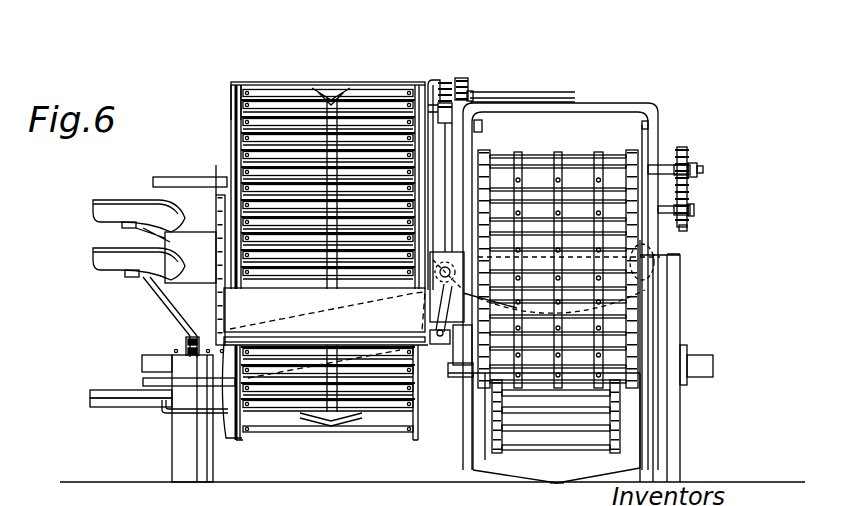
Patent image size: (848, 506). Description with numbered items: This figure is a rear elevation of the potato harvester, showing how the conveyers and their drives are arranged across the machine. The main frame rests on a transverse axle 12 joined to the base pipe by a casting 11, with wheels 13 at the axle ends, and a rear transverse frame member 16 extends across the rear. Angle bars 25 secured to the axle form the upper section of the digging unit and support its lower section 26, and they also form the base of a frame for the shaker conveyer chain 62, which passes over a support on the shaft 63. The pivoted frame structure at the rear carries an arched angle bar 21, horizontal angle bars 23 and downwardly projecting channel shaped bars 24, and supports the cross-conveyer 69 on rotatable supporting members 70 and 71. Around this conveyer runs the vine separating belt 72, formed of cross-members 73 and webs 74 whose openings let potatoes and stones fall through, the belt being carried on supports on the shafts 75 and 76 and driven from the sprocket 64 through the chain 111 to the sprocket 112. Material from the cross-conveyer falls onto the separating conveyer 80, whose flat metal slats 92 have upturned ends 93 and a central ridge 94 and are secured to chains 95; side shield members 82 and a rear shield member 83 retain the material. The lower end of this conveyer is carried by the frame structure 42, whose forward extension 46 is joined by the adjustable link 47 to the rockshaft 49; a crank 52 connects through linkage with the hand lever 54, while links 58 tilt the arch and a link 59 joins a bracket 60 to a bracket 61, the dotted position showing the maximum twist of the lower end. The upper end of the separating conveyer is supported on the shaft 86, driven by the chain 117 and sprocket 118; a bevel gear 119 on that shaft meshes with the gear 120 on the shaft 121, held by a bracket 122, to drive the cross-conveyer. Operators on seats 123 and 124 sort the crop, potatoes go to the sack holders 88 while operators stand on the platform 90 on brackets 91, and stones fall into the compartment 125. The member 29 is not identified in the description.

The casting 11 is at (505, 440).
The transverse axle 12 is at (142, 358).
The wheels 13 is at (172, 446).
The rear transverse frame member 16 is at (410, 383).
The arched angle bar 21 is at (650, 103).
The horizontally extending angle bars 23 is at (492, 197).
The channel shaped bars 24 is at (640, 345).
The angle bars 25 is at (640, 392).
The lower section of the digging unit 26 is at (485, 468).
The brace joint 29 is at (557, 483).
The frame structure 42 is at (225, 352).
The forward extension 46 is at (210, 235).
The manually adjustable link 47 is at (220, 170).
The transverse rockshaft 49 is at (188, 340).
The crank 52 is at (218, 312).
The hand lever 54 is at (170, 288).
The links 58 is at (633, 125).
The link 59 is at (472, 378).
The bracket 60 is at (458, 355).
The bracket 61 is at (473, 298).
The shaker conveyer chain 62 is at (630, 406).
The shaft 63 is at (695, 212).
The sprocket 64 is at (690, 222).
The cross-conveyer 69 is at (622, 312).
The rotatable supporting member 70 is at (660, 255).
The shaft 71 is at (422, 300).
The belt 72 is at (500, 157).
The cross-members 73 is at (590, 165).
The webs 74 is at (540, 232).
The shaft 75 is at (706, 170).
The shaft 76 is at (700, 356).
The separating conveyer 80 is at (282, 420).
The side shield members 82 is at (229, 84).
The shield member 83 is at (324, 309).
The shaft 86 is at (445, 100).
The sack holders 88 is at (186, 178).
The platform 90 is at (92, 391).
The brackets 91 is at (95, 404).
The flat metal slats 92 is at (283, 122).
The upturned ends 93 is at (250, 82).
The upstanding ridge 94 is at (338, 120).
The chains 95 is at (240, 430).
The chain 111 is at (692, 200).
The sprocket 112 is at (690, 158).
The chain 117 is at (520, 100).
The sprocket 118 is at (500, 94).
The bevel gear 119 is at (470, 92).
The gear 120 is at (460, 84).
The shaft 121 is at (478, 140).
The bracket 122 is at (432, 85).
The seat 123 is at (125, 200).
The seat 124 is at (120, 250).
The compartment 125 is at (230, 92).